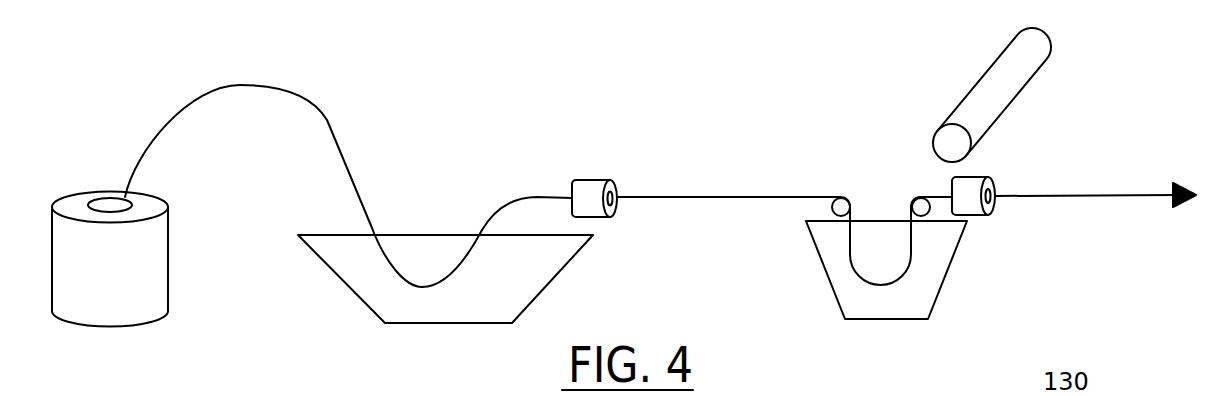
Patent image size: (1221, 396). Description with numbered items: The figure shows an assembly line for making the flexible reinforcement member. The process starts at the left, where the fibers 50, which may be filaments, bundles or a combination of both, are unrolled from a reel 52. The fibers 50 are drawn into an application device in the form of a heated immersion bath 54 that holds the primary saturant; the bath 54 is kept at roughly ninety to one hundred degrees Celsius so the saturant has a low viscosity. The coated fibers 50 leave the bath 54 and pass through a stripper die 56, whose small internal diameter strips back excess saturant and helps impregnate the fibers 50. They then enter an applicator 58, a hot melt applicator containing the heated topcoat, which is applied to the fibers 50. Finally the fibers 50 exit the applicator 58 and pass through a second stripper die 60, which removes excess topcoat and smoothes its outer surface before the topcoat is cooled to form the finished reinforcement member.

The fibers 50 is at (258, 85).
The reel 52 is at (162, 290).
The heated immersion bath 54 is at (532, 277).
The stripper die 56 is at (592, 183).
The applicator 58 is at (837, 273).
The second stripper die 60 is at (972, 185).